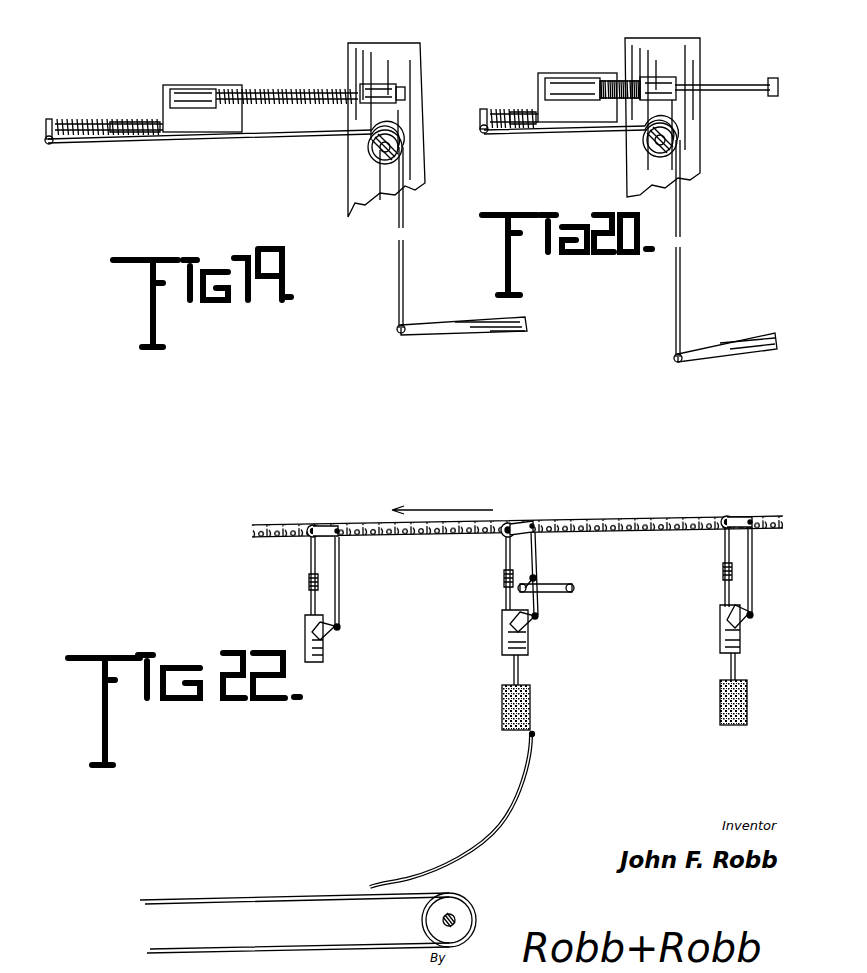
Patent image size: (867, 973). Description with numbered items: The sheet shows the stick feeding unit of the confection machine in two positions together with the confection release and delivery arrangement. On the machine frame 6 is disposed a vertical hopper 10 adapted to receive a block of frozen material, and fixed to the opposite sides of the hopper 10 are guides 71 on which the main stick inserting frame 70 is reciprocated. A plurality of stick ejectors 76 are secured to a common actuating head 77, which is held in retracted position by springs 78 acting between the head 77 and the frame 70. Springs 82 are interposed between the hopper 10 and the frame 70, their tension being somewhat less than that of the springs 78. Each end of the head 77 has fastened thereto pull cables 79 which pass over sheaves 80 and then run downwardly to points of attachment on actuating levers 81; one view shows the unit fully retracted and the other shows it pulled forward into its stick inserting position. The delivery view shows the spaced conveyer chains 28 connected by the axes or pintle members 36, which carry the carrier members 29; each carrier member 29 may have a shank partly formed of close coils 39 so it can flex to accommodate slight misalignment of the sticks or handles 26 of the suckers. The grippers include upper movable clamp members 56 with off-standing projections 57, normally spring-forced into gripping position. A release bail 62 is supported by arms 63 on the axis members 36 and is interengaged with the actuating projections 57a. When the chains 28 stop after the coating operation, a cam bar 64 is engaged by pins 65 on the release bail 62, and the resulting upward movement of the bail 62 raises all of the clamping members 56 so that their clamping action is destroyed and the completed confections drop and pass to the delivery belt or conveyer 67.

In FIG. 22, the frame 6 is at (505, 815).
In FIG. 19, the hopper 10 is at (402, 62).
In FIG. 20, the hopper 10 is at (683, 58).
In FIG. 22, the sticks or handles 26 is at (718, 667).
In FIG. 22, the chains 28 is at (652, 520).
In FIG. 22, the carrier members 29 is at (311, 556).
In FIG. 22, the axes or pintle members 36 is at (313, 522).
In FIG. 22, the coils 39 is at (308, 582).
In FIG. 22, the upper movable clamp members 56 is at (304, 636).
In FIG. 22, the off-standing projections 57 is at (538, 618).
In FIG. 22, the actuating projections 57a is at (341, 626).
In FIG. 22, the release bail 62 is at (342, 572).
In FIG. 22, the arms 63 is at (332, 522).
In FIG. 22, the cam bar 64 is at (560, 584).
In FIG. 22, the pins 65 is at (536, 577).
In FIG. 22, the delivery belt or conveyer 67 is at (330, 932).
In FIG. 19, the main stick inserting frame 70 is at (208, 120).
In FIG. 20, the main stick inserting frame 70 is at (573, 110).
In FIG. 19, the guides 71 is at (265, 92).
In FIG. 20, the guides 71 is at (752, 88).
In FIG. 19, the stick ejectors 76 is at (76, 125).
In FIG. 20, the stick ejectors 76 is at (487, 115).
In FIG. 19, the actuating head 77 is at (46, 128).
In FIG. 20, the actuating head 77 is at (484, 129).
In FIG. 19, the springs 78 is at (100, 125).
In FIG. 20, the springs 78 is at (519, 112).
In FIG. 19, the pull cables 79 is at (283, 135).
In FIG. 20, the pull cables 79 is at (520, 135).
In FIG. 19, the sheaves 80 is at (372, 154).
In FIG. 20, the sheaves 80 is at (677, 132).
In FIG. 19, the actuating levers 81 is at (457, 330).
In FIG. 20, the actuating levers 81 is at (732, 352).
In FIG. 19, the springs 82 is at (345, 88).
In FIG. 20, the springs 82 is at (612, 78).